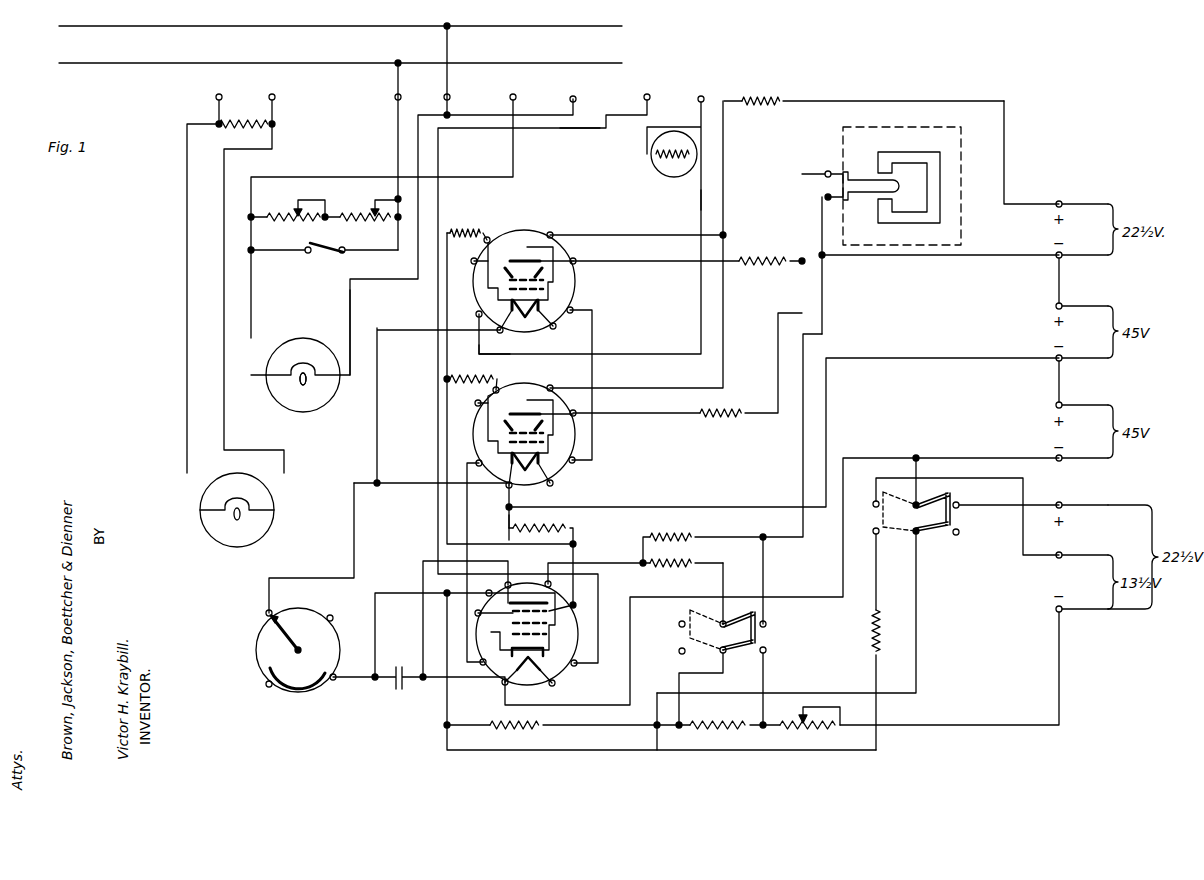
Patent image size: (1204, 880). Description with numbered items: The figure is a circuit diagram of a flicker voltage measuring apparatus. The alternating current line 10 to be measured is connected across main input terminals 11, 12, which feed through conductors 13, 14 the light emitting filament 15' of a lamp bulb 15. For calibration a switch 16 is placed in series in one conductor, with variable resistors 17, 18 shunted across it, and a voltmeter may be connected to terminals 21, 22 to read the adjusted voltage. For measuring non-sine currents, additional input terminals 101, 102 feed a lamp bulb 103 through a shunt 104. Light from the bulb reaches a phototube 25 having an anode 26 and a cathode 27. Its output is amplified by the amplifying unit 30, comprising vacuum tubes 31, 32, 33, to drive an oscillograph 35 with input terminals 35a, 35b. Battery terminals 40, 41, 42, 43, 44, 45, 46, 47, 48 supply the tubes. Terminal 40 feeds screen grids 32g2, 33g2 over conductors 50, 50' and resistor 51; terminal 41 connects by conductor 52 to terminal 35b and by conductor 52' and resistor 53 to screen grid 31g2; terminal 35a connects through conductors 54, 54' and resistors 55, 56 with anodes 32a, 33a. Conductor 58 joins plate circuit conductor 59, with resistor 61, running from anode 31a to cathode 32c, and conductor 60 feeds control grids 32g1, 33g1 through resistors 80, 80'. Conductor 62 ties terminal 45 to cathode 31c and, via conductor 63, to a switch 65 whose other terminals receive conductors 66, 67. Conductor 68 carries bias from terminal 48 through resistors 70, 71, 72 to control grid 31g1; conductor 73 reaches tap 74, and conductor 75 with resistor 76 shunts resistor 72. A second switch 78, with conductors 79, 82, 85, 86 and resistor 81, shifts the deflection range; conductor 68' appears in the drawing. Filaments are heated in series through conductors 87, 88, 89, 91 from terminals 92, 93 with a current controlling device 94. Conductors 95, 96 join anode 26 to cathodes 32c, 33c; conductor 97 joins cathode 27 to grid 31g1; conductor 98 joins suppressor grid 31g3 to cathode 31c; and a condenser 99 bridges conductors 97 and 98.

The alternating current line 10 is at (340, 44).
The main input terminal 11 is at (395, 97).
The main input terminal 12 is at (450, 97).
The conductor 13 is at (398, 138).
The conductor 14 is at (350, 296).
The lamp bulb 15 is at (287, 375).
The light emitting filament 15' is at (303, 352).
The switch 16 is at (316, 256).
The variable resistor 17 is at (288, 210).
The variable resistor 18 is at (368, 210).
The terminal 21 is at (513, 94).
The terminal 22 is at (573, 96).
The phototube 25 is at (250, 650).
The anode 26 is at (300, 648).
The cathode 27 is at (300, 676).
The amplifying unit 30 is at (640, 470).
The vacuum tube 31 is at (585, 636).
The anode 31a is at (524, 600).
The cathode 31c is at (540, 685).
The control grid 31g1 is at (548, 636).
The screen grid 31g2 is at (550, 623).
The suppressor grid 31g3 is at (575, 604).
The vacuum tube 32 is at (585, 440).
The anode 32a is at (527, 400).
The cathode 32c is at (545, 480).
The control grid 32g1 is at (540, 442).
The screen grid 32g2 is at (560, 433).
The vacuum tube 33 is at (585, 289).
The anode 33a is at (517, 247).
The cathode 33c is at (526, 326).
The control grid 33g1 is at (540, 289).
The screen grid 33g2 is at (560, 281).
The oscillograph 35 is at (836, 134).
The input terminal 35a is at (828, 171).
The input terminal 35b is at (826, 198).
The battery terminal 40 is at (1082, 195).
The battery terminal 41 is at (1082, 277).
The battery terminal 42 is at (1082, 298).
The battery terminal 43 is at (1082, 378).
The battery terminal 44 is at (1082, 396).
The battery terminal 45 is at (1082, 466).
The battery terminal 46 is at (1082, 496).
The battery terminal 47 is at (1082, 546).
The battery terminal 48 is at (1082, 617).
The conductor 50 is at (948, 139).
The conductor 50' is at (638, 244).
The resistor 51 is at (763, 98).
The conductor 52 is at (939, 265).
The conductor 52' is at (710, 446).
The resistor 53 is at (675, 534).
The conductor 54 is at (636, 402).
The conductor 54' is at (656, 250).
The resistor 55 is at (722, 414).
The resistor 56 is at (763, 258).
The conductor 58 is at (940, 358).
The plate circuit conductor 59 is at (493, 506).
The conductor 60 is at (447, 497).
The resistor 61 is at (565, 522).
The conductor 62 is at (888, 455).
The conductor 63 is at (916, 468).
The double-pole double-throw switch 65 is at (962, 513).
The conductor 66 is at (1013, 505).
The conductor 67 is at (1023, 488).
The conductor 68 is at (734, 660).
The conductor 68' is at (661, 737).
The variable resistor 70 is at (802, 730).
The resistor 71 is at (722, 727).
The resistor 72 is at (524, 727).
The conductor 73 is at (916, 650).
The tap 74 is at (657, 752).
The conductor 75 is at (876, 578).
The resistor 76 is at (876, 630).
The double-pole switch 78 is at (766, 638).
The conductor 79 is at (723, 578).
The resistor 80 is at (470, 369).
The resistor 80' is at (467, 221).
The resistor 81 is at (676, 566).
The conductor 82 is at (763, 580).
The conductor 85 is at (723, 668).
The conductor 86 is at (763, 668).
The conductor 87 is at (578, 130).
The conductor 88 is at (509, 525).
The conductor 89 is at (592, 370).
The conductor 91 is at (701, 200).
The input terminal 92 is at (647, 94).
The input terminal 93 is at (701, 96).
The current controlling device 94 is at (652, 160).
The conductor 95 is at (354, 528).
The conductor 96 is at (377, 443).
The conductor 97 is at (375, 592).
The conductor 98 is at (423, 565).
The condenser 99 is at (395, 690).
The input terminal 101 is at (216, 97).
The input terminal 102 is at (275, 97).
The lamp bulb 103 is at (220, 533).
The shunt 104 is at (233, 126).